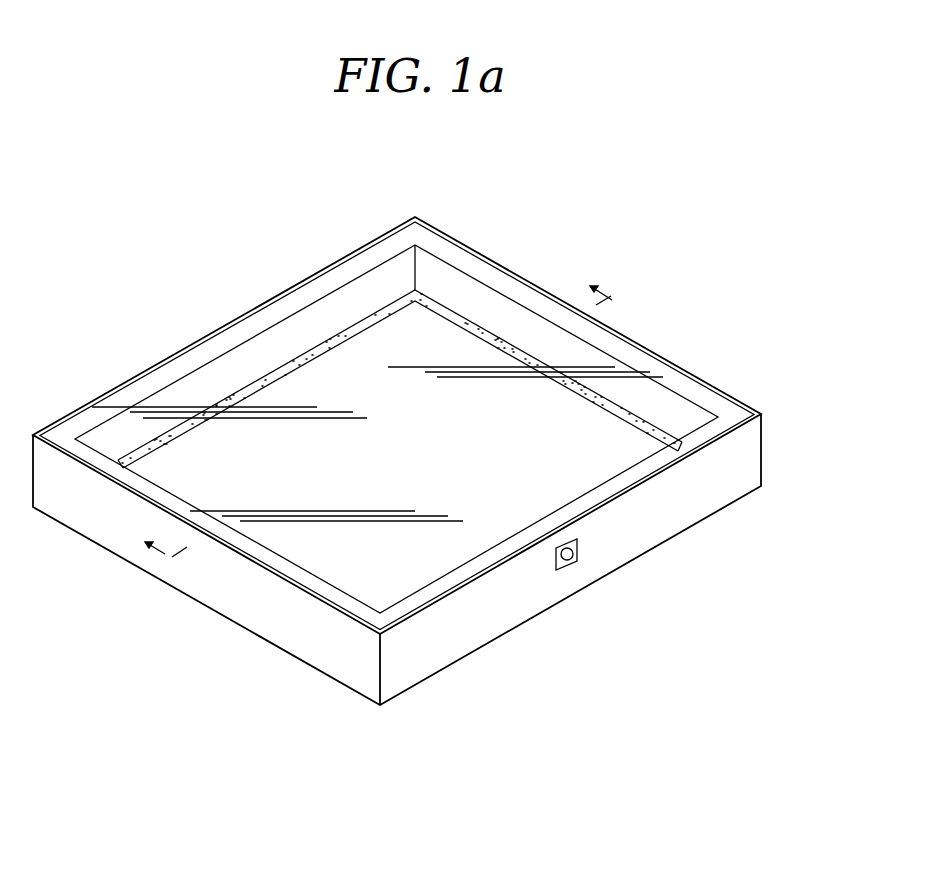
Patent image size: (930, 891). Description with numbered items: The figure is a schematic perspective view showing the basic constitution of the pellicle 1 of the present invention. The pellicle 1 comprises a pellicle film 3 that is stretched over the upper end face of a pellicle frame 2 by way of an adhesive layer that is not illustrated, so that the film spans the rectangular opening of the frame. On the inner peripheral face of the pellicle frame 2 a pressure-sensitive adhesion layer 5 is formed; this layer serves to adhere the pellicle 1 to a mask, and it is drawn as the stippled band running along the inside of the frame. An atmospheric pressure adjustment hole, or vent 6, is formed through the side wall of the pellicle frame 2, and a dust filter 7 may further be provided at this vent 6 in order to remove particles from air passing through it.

The pellicle 1 is at (418, 461).
The pellicle frame 2 is at (763, 462).
The pellicle film 3 is at (280, 397).
The pressure-sensitive adhesion layer 5 is at (650, 420).
The atmospheric pressure adjustment hole (vent) 6 is at (613, 601).
The dust filter 7 is at (576, 548).